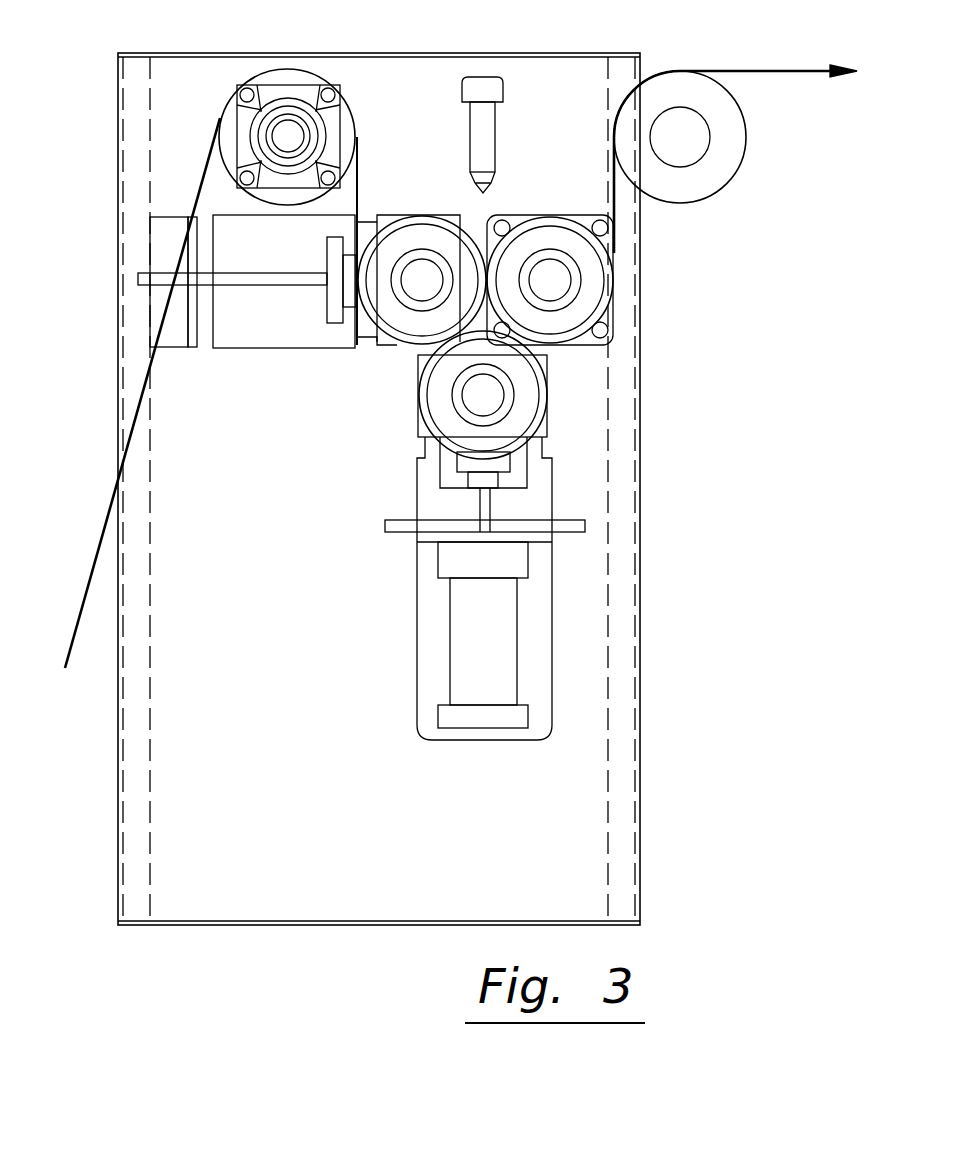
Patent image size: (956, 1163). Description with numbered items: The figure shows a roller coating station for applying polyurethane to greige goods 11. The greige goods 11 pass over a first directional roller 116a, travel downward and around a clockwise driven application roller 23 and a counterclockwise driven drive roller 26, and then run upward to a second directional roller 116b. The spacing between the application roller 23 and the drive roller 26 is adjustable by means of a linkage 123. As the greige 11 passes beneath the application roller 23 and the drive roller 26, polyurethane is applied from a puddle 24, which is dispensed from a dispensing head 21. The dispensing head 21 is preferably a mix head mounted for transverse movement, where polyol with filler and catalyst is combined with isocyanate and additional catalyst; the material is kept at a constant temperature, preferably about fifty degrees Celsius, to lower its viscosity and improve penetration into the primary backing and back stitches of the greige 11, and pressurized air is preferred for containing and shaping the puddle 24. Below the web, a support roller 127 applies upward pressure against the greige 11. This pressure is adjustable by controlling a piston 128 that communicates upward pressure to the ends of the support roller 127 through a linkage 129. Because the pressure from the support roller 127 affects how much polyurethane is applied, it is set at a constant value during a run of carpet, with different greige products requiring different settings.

The greige goods 11 is at (763, 70).
The dispensing head 21 is at (473, 77).
The application roller 23 is at (388, 347).
The polyurethane puddle 24 is at (480, 233).
The drive roller 26 is at (527, 218).
The first directional roller 116a is at (273, 70).
The second directional roller 116b is at (707, 177).
The linkage 123 is at (300, 285).
The support roller 127 is at (548, 435).
The piston 128 is at (478, 560).
The linkage 129 is at (481, 507).